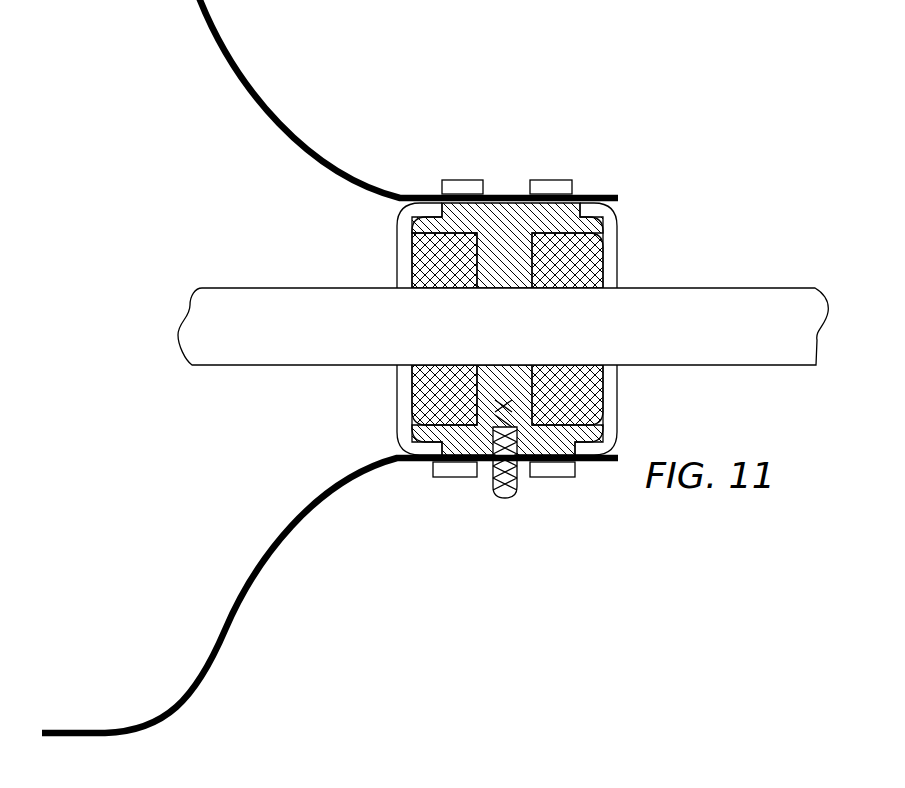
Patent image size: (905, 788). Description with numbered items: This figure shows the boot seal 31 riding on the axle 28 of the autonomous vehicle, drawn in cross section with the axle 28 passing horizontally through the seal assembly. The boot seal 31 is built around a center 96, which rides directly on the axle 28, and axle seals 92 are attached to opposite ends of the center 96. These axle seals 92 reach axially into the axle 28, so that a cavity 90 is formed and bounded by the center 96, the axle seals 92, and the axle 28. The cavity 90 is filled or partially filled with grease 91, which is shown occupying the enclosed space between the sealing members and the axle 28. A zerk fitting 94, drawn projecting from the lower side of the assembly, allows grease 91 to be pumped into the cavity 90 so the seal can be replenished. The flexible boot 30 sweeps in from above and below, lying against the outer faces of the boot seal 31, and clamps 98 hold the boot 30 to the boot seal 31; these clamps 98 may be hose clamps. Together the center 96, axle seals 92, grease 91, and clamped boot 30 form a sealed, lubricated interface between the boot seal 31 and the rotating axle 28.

The axle 28 is at (337, 346).
The boot 30 is at (250, 95).
The boot seal 31 is at (600, 160).
The cavity 90 is at (617, 270).
The grease 91 is at (576, 272).
The axle seals 92 is at (401, 258).
The zerk fitting 94 is at (491, 496).
The center 96 is at (515, 215).
The clamps 98 is at (460, 180).